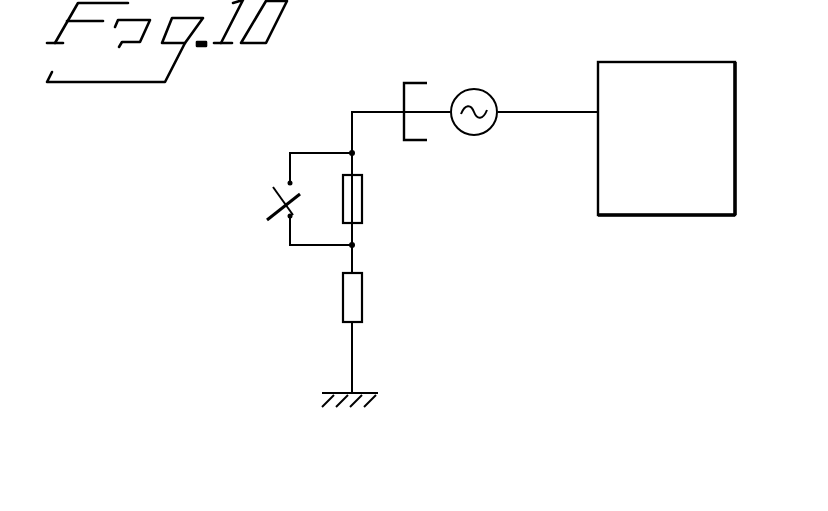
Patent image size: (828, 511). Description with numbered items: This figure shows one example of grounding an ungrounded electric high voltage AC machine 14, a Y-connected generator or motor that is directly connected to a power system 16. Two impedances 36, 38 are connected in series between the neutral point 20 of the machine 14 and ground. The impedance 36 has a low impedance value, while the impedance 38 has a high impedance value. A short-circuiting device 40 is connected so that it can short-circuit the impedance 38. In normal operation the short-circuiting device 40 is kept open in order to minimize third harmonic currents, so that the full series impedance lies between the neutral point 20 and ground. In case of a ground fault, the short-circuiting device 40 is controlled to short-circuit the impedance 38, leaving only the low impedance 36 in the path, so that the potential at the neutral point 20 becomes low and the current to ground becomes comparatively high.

The machine 14 is at (478, 100).
The power system 16 is at (707, 73).
The neutral point 20 is at (402, 110).
The impedance 36 is at (356, 293).
The impedance 38 is at (357, 195).
The short-circuiting device 40 is at (269, 208).